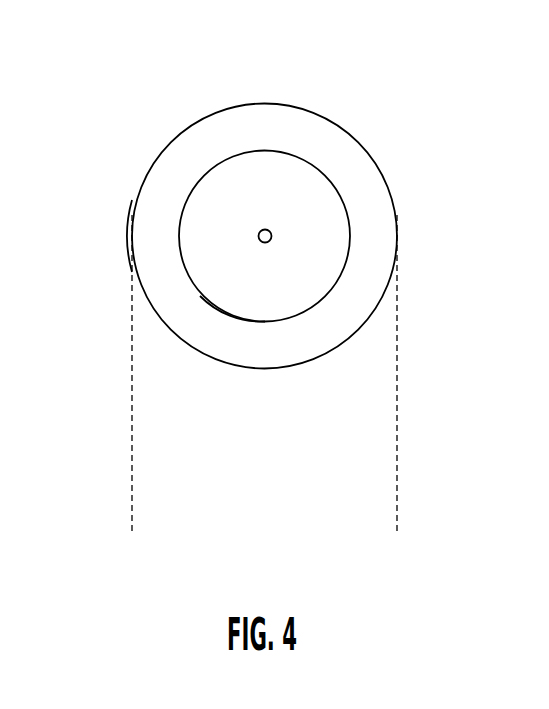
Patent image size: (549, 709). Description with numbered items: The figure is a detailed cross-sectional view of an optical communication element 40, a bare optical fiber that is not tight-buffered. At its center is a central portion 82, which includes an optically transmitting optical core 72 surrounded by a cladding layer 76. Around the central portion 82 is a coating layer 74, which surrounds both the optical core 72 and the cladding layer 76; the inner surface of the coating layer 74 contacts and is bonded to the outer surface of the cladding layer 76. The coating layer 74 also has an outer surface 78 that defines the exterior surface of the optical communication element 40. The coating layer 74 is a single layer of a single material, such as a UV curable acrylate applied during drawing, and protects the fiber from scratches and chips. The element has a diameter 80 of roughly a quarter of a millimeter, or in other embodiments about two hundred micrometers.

The optical communication element 40 is at (150, 51).
The optical core 72 is at (265, 222).
The coating layer 74 is at (340, 346).
The cladding layer 76 is at (332, 233).
The outer surface 78 is at (123, 237).
The diameter 80 is at (389, 523).
The central portion 82 is at (231, 316).